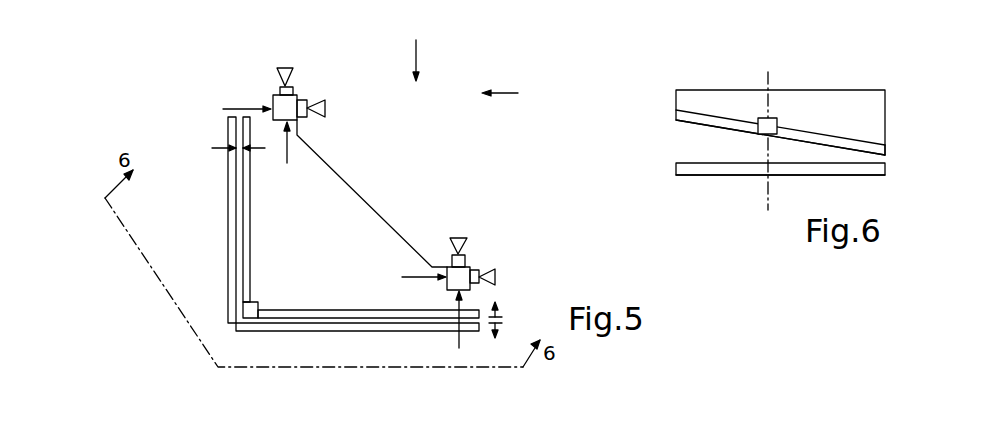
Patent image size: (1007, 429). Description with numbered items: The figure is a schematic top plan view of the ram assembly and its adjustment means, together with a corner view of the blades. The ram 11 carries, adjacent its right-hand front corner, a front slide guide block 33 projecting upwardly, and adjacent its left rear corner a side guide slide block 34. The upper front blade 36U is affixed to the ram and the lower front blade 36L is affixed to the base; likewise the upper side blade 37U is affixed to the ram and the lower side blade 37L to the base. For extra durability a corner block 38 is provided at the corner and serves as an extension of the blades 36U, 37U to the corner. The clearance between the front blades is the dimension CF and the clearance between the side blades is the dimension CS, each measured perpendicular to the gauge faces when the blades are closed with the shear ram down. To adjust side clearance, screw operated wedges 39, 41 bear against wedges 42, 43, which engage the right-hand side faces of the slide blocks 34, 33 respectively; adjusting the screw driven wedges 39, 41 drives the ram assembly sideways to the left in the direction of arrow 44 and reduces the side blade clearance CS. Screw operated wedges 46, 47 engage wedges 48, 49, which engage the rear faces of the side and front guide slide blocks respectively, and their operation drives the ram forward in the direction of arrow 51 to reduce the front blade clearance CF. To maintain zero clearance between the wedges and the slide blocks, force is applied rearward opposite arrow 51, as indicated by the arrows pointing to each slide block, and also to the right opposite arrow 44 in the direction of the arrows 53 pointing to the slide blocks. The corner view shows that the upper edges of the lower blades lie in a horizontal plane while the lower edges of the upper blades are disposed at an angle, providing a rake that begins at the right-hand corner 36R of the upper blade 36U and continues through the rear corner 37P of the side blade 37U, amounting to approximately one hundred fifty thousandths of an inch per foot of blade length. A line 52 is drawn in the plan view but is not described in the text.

In FIG. 5, the ram 11 is at (350, 250).
In FIG. 5, the front slide guide block 33 is at (463, 282).
In FIG. 5, the side guide slide block 34 is at (273, 97).
In FIG. 5, the upper front blade 36U is at (330, 311).
In FIG. 6, the upper front blade 36U is at (825, 140).
In FIG. 5, the lower front blade 36L is at (300, 330).
In FIG. 6, the lower front blade 36L is at (832, 170).
In FIG. 6, the right-hand corner of upper blade 36R is at (887, 147).
In FIG. 5, the upper side blade 37U is at (250, 217).
In FIG. 6, the upper side blade 37U is at (712, 120).
In FIG. 5, the lower side blade 37L is at (228, 220).
In FIG. 6, the lower side blade 37L is at (720, 168).
In FIG. 6, the rear corner of side blade 37P is at (676, 107).
In FIG. 5, the corner block 38 is at (254, 311).
In FIG. 6, the corner block 38 is at (773, 120).
In FIG. 5, the screw operated wedge 39 is at (325, 106).
In FIG. 5, the screw operated wedge 41 is at (495, 277).
In FIG. 5, the wedge 42 is at (307, 116).
In FIG. 5, the wedge 43 is at (470, 270).
In FIG. 5, the arrow 44 is at (507, 80).
In FIG. 5, the screw operated wedge 46 is at (286, 67).
In FIG. 5, the screw operated wedge 47 is at (458, 237).
In FIG. 5, the wedge 48 is at (293, 92).
In FIG. 5, the wedge 49 is at (462, 262).
In FIG. 5, the arrow 51 is at (433, 56).
In FIG. 5, the axis line 52 is at (287, 153).
In FIG. 5, the arrows 53 is at (230, 108).
In FIG. 5, the side blade clearance CS is at (221, 151).
In FIG. 5, the front blade clearance CF is at (484, 331).